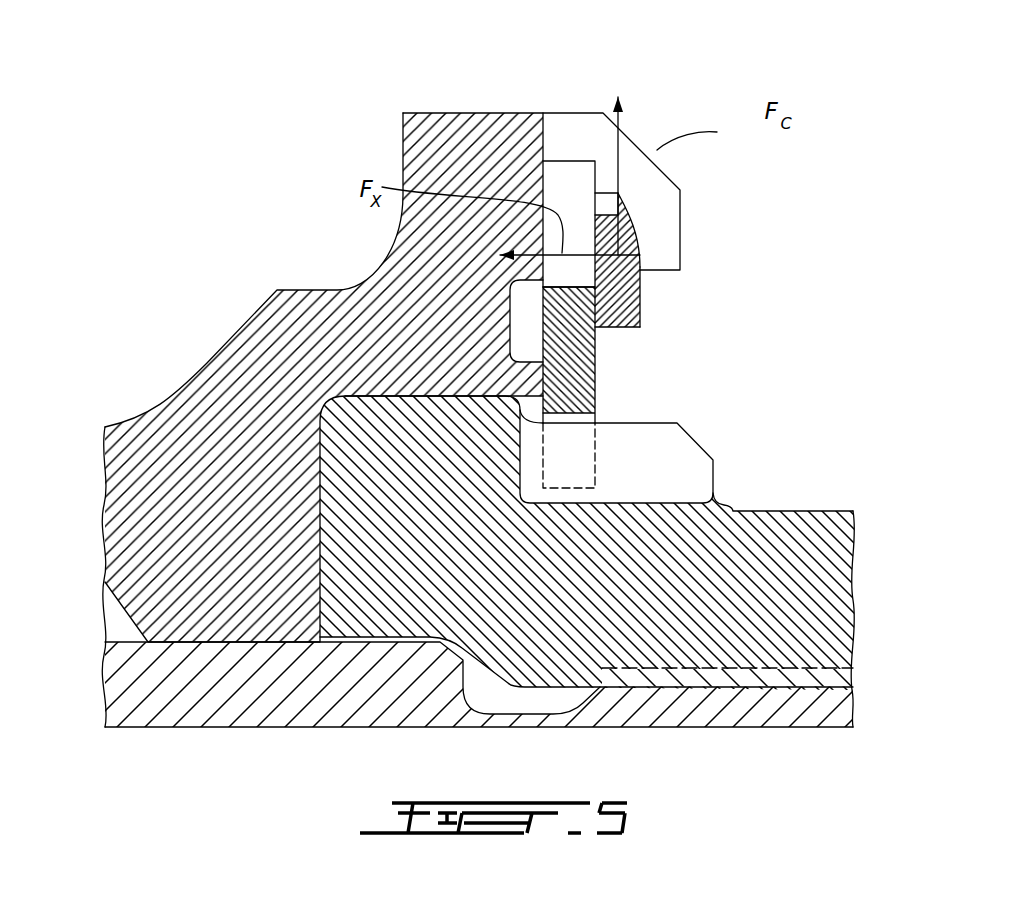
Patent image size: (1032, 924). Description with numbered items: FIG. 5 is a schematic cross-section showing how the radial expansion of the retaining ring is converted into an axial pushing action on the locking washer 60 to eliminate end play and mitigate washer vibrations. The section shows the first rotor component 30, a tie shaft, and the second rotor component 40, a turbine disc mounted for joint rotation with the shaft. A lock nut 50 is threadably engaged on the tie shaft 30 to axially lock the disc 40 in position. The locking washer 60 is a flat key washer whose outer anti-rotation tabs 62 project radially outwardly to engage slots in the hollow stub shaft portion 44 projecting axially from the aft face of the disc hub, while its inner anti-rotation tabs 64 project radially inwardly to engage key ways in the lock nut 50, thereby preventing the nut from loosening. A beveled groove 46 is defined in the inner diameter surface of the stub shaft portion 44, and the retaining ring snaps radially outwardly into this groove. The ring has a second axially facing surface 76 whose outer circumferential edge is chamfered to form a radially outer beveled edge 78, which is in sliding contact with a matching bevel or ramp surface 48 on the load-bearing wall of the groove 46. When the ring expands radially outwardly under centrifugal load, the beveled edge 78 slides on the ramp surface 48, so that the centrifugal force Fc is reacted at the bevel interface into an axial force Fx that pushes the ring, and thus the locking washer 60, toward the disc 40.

The first rotor component 30 is at (818, 710).
The second rotor component 40 is at (84, 490).
The stub shaft portion 44 is at (387, 305).
The beveled groove 46 is at (607, 203).
The bevel or ramp surface 48 is at (630, 233).
The lock nut 50 is at (827, 595).
The locking washer 60 is at (595, 385).
The outer anti-rotation tabs 62 is at (570, 172).
The inner anti-rotation tabs 64 is at (577, 458).
The second axially facing surface 76 is at (640, 305).
The radially outer beveled edge 78 is at (637, 252).